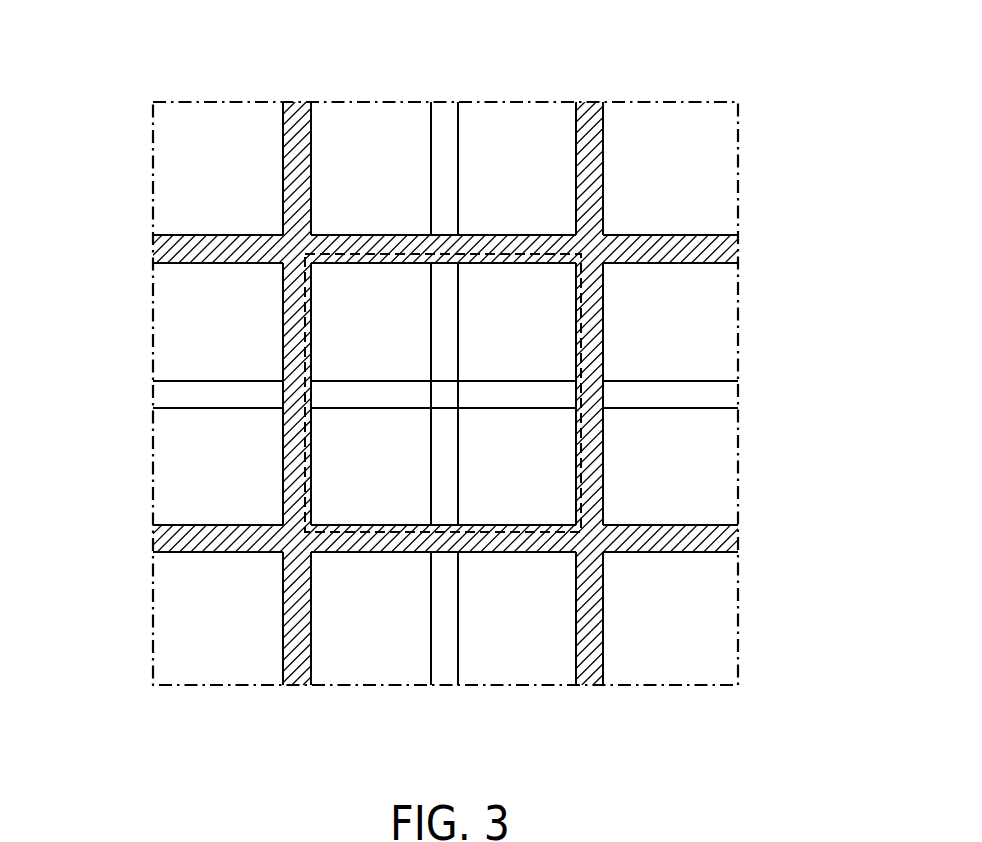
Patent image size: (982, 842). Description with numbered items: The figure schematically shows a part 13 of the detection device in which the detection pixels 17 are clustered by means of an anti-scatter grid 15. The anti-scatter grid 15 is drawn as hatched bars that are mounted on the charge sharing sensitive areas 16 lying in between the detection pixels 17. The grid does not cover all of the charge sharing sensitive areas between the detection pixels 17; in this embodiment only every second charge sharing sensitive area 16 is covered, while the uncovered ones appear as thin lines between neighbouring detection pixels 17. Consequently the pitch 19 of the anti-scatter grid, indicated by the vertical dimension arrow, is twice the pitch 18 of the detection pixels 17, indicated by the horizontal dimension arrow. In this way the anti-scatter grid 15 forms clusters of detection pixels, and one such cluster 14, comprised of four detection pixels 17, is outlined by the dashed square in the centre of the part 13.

The part of the detection device 13 is at (758, 94).
The cluster 14 is at (582, 324).
The anti-scatter grid 15 is at (604, 150).
The charge sharing sensitive area 16 is at (458, 150).
The detection pixel 17 is at (242, 629).
The pitch of the detection pixels 18 is at (283, 74).
The pitch of the anti-scatter grid 19 is at (126, 535).